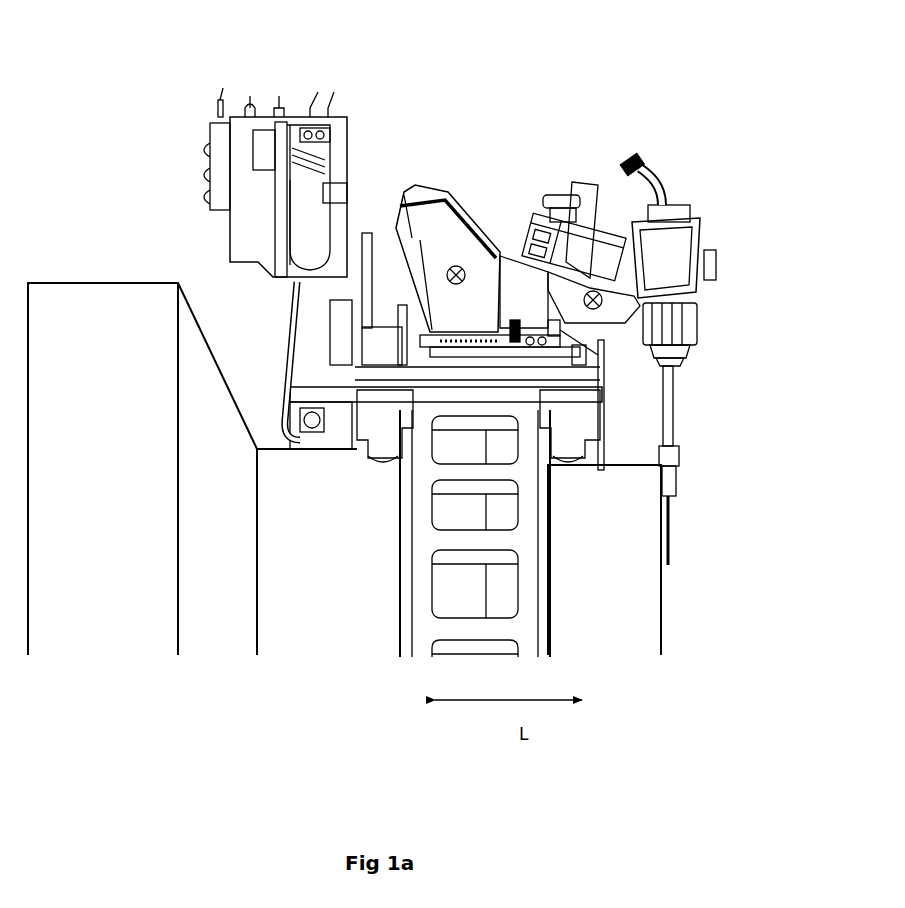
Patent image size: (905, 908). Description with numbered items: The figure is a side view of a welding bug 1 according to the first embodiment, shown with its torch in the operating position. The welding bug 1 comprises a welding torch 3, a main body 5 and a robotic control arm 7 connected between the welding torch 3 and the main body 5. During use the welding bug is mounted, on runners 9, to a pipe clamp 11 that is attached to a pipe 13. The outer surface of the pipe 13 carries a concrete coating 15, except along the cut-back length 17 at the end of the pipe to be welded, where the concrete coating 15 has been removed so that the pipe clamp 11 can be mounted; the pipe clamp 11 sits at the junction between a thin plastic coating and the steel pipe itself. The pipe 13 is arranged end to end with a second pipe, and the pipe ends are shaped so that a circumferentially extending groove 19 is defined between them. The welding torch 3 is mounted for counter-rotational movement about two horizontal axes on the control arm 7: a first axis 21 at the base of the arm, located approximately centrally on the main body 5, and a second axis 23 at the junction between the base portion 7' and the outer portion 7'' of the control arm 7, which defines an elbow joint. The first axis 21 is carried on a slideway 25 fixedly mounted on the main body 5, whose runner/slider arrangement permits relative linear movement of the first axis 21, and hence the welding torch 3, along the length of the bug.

The welding bug 1 is at (484, 163).
The welding torch 3 is at (692, 411).
The main body 5 is at (610, 357).
The robotic control arm 7 is at (619, 178).
The base portion of the control arm 7' is at (524, 292).
The outer portion of the control arm 7'' is at (594, 297).
The runners 9 is at (377, 432).
The pipe clamp 11 is at (480, 641).
The pipe 13 is at (110, 568).
The concrete coating 15 is at (225, 624).
The cut-back length 17 is at (318, 626).
The circumferentially extending groove 19 is at (663, 536).
The first axis 21 is at (447, 256).
The second axis 23 is at (588, 282).
The slideway 25 is at (432, 330).